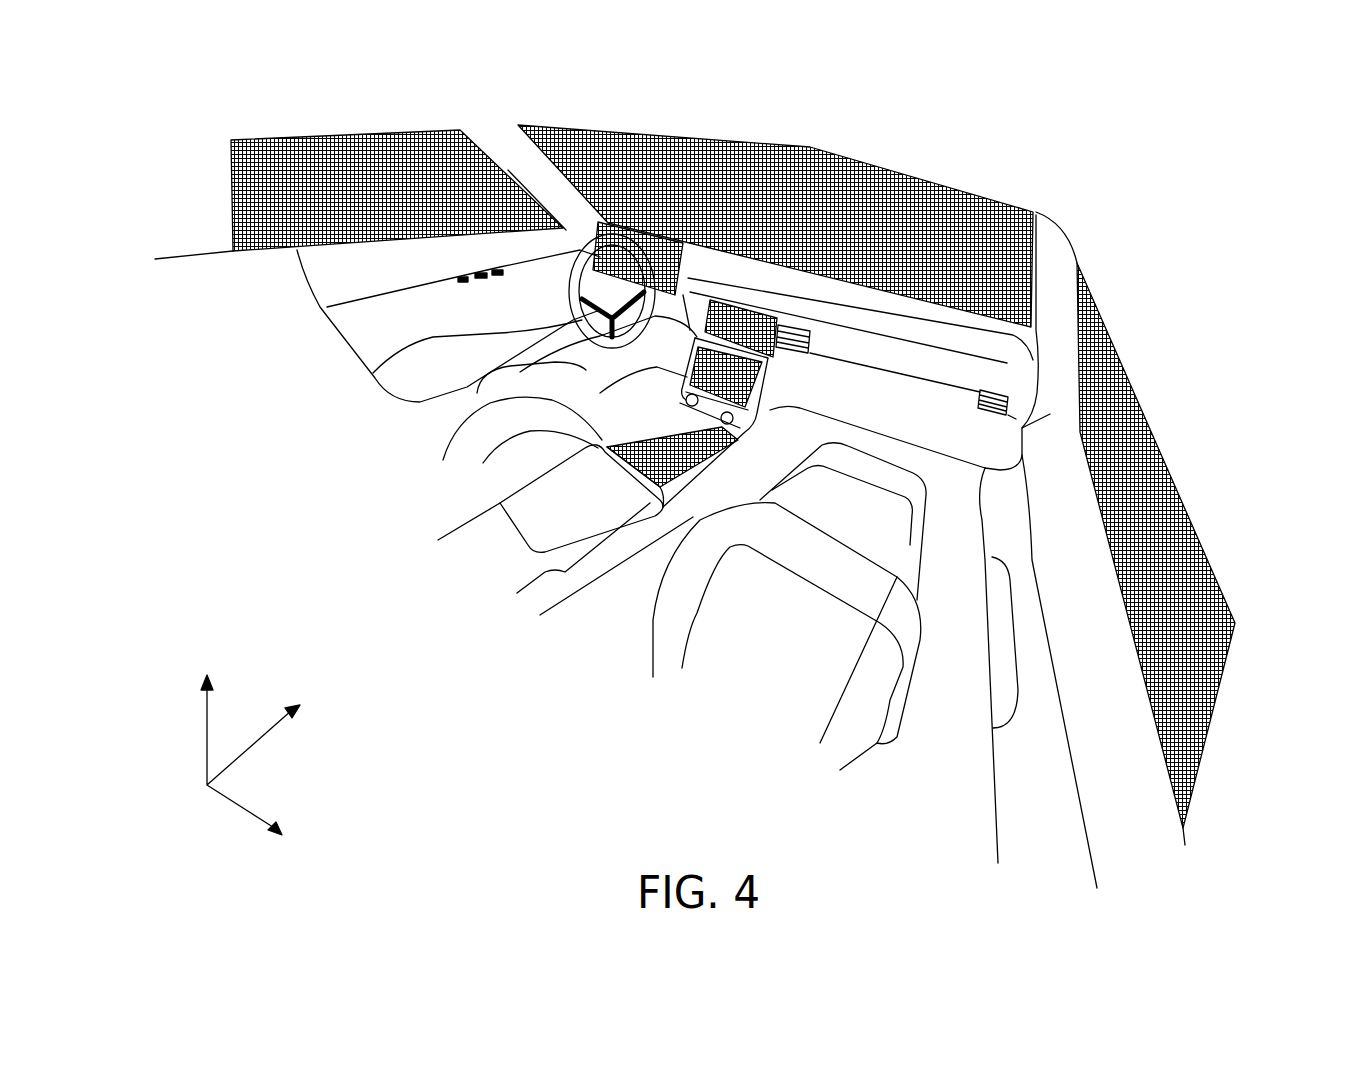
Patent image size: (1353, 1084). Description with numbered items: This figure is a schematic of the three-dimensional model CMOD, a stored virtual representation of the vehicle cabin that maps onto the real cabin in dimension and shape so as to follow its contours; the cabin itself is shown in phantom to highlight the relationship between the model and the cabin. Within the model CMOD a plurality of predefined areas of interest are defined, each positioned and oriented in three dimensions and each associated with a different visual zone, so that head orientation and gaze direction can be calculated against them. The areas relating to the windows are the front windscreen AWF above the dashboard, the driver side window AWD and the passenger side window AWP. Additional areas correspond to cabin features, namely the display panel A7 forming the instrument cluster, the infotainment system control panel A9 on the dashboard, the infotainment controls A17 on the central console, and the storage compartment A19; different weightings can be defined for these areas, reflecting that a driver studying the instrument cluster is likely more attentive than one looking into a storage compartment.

The driver side window area of interest AWD is at (270, 185).
The front windscreen area of interest AWF is at (945, 192).
The passenger side window area of interest AWP is at (1123, 387).
The display panel area of interest A7 is at (627, 260).
The infotainment system control panel area of interest A9 is at (753, 323).
The infotainment controls area of interest A17 is at (737, 382).
The storage compartment area of interest A19 is at (687, 447).
The three-dimensional model CMOD is at (373, 440).